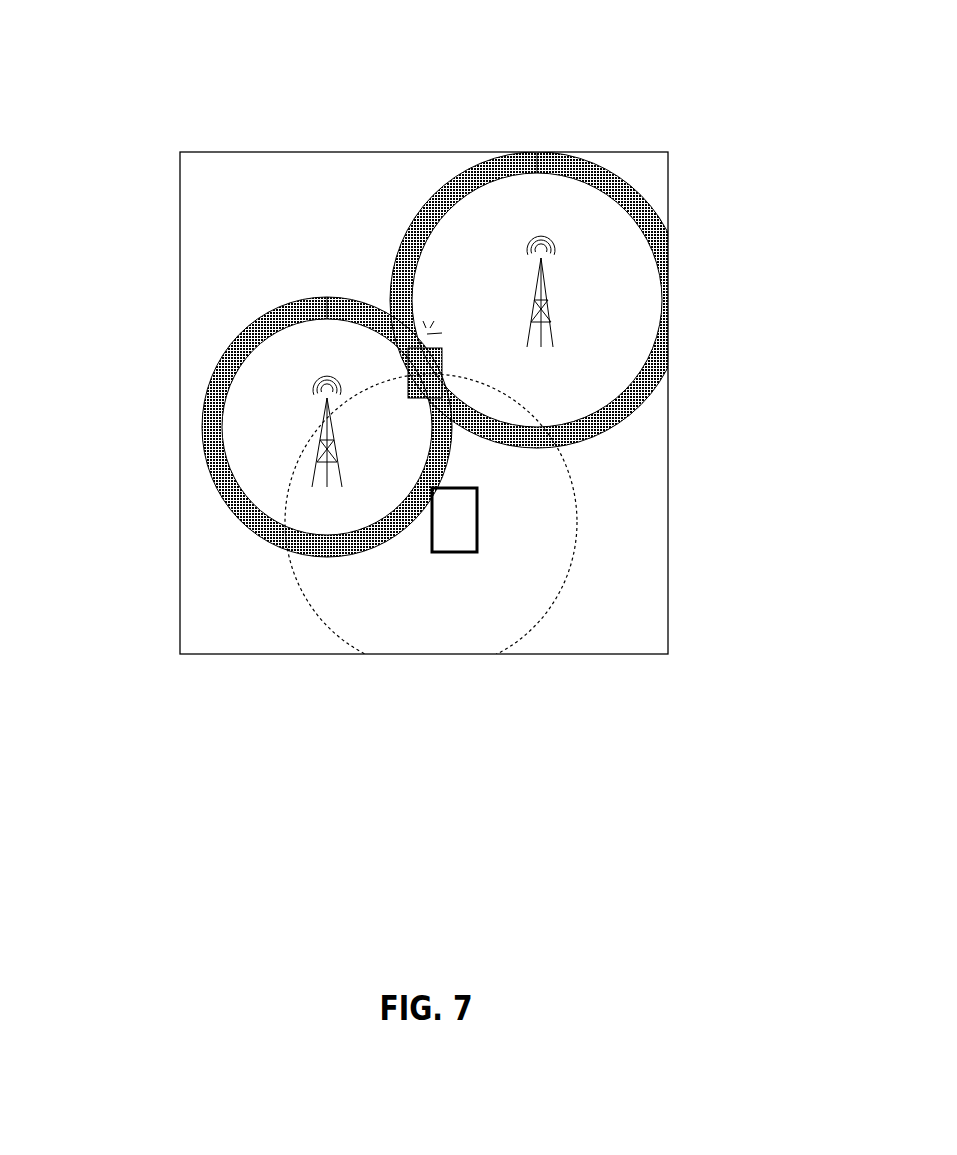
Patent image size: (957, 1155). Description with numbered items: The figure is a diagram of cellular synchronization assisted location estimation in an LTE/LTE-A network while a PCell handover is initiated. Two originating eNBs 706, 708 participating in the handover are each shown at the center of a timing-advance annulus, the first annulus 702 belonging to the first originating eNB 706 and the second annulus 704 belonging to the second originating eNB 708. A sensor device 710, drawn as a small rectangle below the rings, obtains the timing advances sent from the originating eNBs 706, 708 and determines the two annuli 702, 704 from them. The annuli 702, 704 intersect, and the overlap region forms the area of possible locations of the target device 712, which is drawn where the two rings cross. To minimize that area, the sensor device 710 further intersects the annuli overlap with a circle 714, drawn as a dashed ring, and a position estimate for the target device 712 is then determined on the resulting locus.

The annulus 702 is at (604, 180).
The annulus 704 is at (241, 520).
The originating eNB 706 is at (528, 241).
The originating eNB 708 is at (322, 397).
The sensor device 710 is at (480, 528).
The target device 712 is at (416, 372).
The circle 714 is at (572, 568).